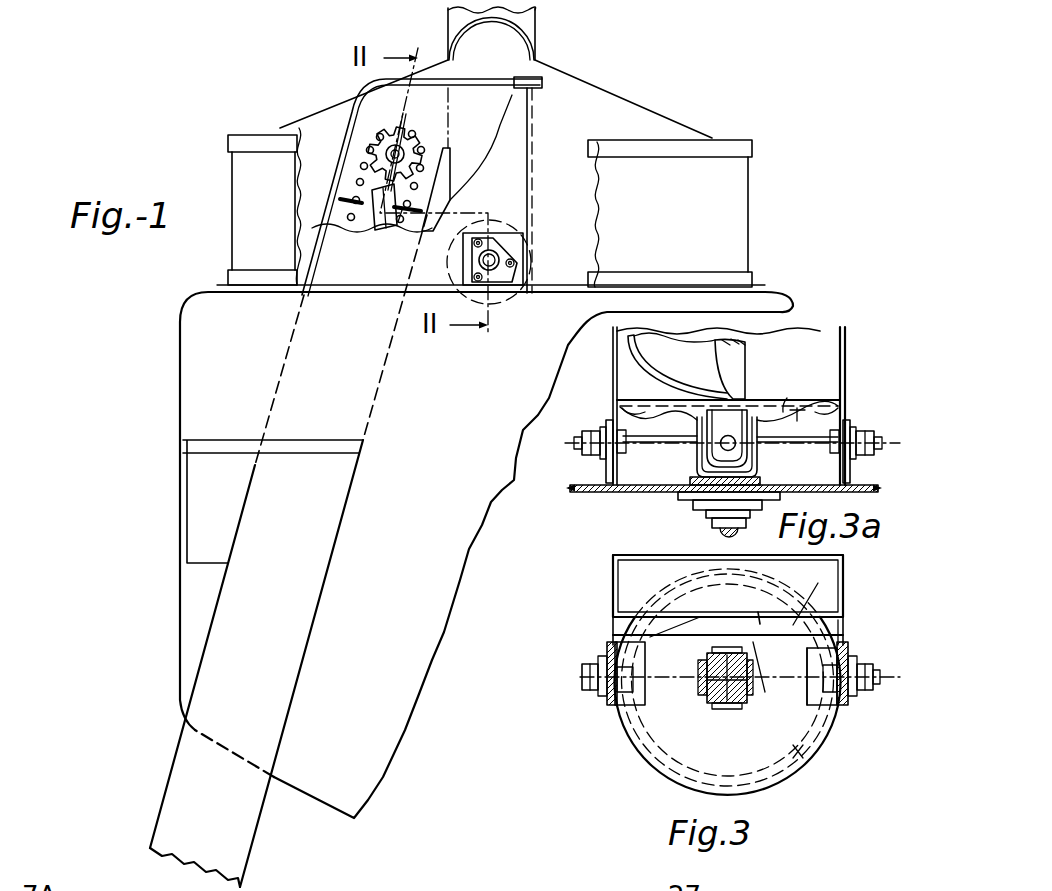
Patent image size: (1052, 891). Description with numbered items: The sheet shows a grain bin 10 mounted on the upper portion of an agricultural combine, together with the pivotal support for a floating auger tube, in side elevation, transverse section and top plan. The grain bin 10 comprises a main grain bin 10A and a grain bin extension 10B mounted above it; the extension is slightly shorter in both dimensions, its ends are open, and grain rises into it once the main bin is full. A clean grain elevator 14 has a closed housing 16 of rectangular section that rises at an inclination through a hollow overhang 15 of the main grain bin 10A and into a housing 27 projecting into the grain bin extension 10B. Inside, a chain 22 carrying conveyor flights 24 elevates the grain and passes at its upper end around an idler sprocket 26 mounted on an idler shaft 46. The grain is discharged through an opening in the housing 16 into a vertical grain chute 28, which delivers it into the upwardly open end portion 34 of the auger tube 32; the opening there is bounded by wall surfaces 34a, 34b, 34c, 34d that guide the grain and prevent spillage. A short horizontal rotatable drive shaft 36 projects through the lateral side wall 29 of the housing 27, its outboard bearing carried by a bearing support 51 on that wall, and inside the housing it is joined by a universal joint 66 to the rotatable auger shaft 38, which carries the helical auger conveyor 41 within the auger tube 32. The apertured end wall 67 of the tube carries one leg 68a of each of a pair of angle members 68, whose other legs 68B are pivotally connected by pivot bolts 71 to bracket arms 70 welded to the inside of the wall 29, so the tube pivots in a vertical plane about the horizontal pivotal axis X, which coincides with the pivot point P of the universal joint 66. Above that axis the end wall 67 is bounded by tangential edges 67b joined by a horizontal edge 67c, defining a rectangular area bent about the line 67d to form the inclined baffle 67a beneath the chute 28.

In FIG. 1, the grain bin 10 is at (159, 370).
In FIG. 1, the main grain bin 10A is at (185, 414).
In FIG. 1, the grain bin extension 10B is at (740, 214).
In FIG. 1, the clean grain elevator 14 is at (338, 548).
In FIG. 1, the hollow overhang 15 is at (180, 327).
In FIG. 1, the closed housing 16 is at (314, 616).
In FIG. 1, the chain 22 is at (358, 220).
In FIG. 1, the conveyor flights 24 is at (394, 136).
In FIG. 1, the idler sprocket 26 is at (404, 148).
In FIG. 1, the housing 27 is at (346, 92).
In FIG. 1, the grain chute 28 is at (476, 154).
In FIG. 3A, the lateral side wall 29 is at (570, 488).
In FIG. 1, the auger tube 32 is at (515, 46).
In FIG. 3, the auger tube 32 is at (630, 740).
In FIG. 3A, the upwardly open end portion 34 is at (641, 378).
In FIG. 3, the upwardly open end portion 34 is at (634, 578).
In FIG. 3A, the wall surface 34a is at (617, 401).
In FIG. 3, the wall surface 34a is at (613, 603).
In FIG. 3A, the wall surface 34b is at (847, 360).
In FIG. 3, the wall surface 34b is at (843, 592).
In FIG. 3, the wall surface 34c is at (838, 556).
In FIG. 3, the wall surface 34d is at (625, 566).
In FIG. 1, the horizontal rotatable drive shaft 36 is at (489, 264).
In FIG. 3A, the horizontal rotatable drive shaft 36 is at (712, 521).
In FIG. 3A, the rotatable auger shaft 38 is at (740, 348).
In FIG. 3A, the helical auger conveyor 41 is at (645, 354).
In FIG. 3, the helical auger conveyor 41 is at (800, 748).
In FIG. 1, the idler shaft 46 is at (388, 152).
In FIG. 1, the bearing support 51 is at (503, 230).
In FIG. 3A, the universal joint 66 is at (697, 467).
In FIG. 3, the universal joint 66 is at (699, 672).
In FIG. 3A, the end wall 67 is at (757, 444).
In FIG. 3, the end wall 67 is at (756, 766).
In FIG. 3A, the baffle 67a is at (807, 396).
In FIG. 3, the baffle 67a is at (753, 606).
In FIG. 3, the tangential edges 67b is at (613, 632).
In FIG. 3, the horizontal edge 67c is at (810, 592).
In FIG. 3, the bend line 67d is at (726, 680).
In FIG. 3A, the angle members 68 is at (622, 412).
In FIG. 3, the angle members 68 is at (632, 700).
In FIG. 3, the leg 68a is at (803, 671).
In FIG. 3, the leg 68B is at (650, 638).
In FIG. 3A, the bracket arms 70 is at (605, 480).
In FIG. 3, the bracket arms 70 is at (607, 655).
In FIG. 3A, the pivot bolts 71 is at (880, 437).
In FIG. 3, the pivot bolts 71 is at (580, 683).
In FIG. 3A, the pivot point P is at (729, 440).
In FIG. 3, the pivot point P is at (722, 685).
In FIG. 3A, the horizontal pivotal axis X is at (730, 443).
In FIG. 3, the horizontal pivotal axis X is at (726, 681).